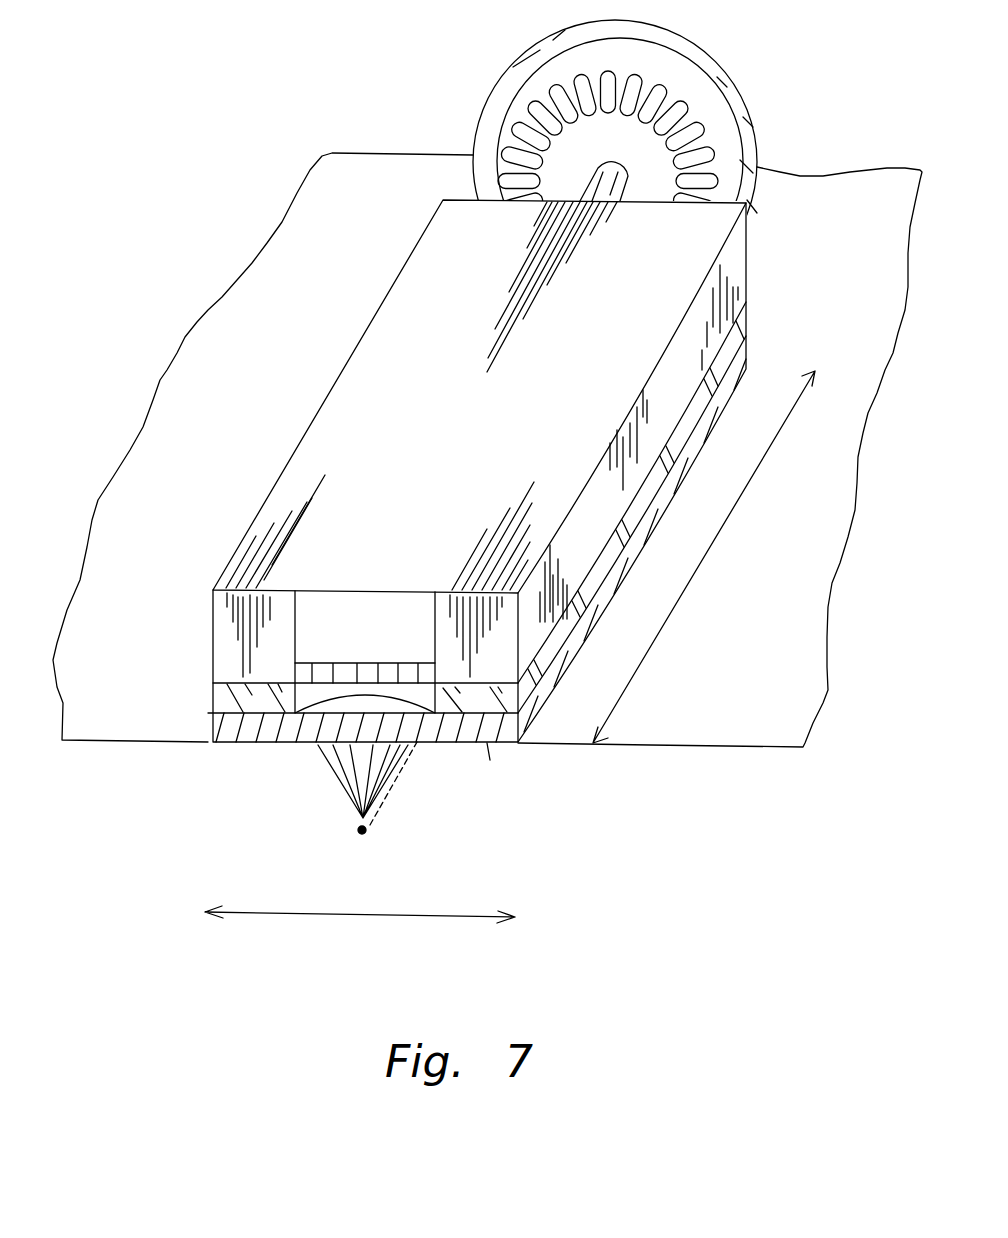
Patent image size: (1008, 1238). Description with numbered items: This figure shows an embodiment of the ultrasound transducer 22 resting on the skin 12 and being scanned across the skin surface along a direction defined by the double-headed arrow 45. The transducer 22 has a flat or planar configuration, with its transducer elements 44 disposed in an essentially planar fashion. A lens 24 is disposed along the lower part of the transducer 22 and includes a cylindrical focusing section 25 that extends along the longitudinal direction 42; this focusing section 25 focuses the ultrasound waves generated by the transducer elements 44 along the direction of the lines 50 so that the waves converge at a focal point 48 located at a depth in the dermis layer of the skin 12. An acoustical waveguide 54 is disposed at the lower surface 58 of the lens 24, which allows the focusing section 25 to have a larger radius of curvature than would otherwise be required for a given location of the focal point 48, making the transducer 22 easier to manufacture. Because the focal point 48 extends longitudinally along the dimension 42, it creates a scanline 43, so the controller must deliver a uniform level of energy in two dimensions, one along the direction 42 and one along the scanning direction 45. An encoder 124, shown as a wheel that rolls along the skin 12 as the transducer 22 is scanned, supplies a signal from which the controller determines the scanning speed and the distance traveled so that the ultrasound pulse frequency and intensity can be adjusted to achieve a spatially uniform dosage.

The skin 12 is at (763, 720).
The encoder 124 is at (538, 55).
The transducer 22 is at (327, 378).
The lens 24 is at (748, 318).
The acoustical waveguide 54 is at (748, 352).
The transducer elements 44 is at (388, 670).
The focusing section 25 is at (347, 700).
The lines 50 is at (338, 793).
The scanline 43 is at (408, 762).
The focal point 48 is at (358, 832).
The lower surface of lens 58 is at (487, 743).
The direction 42 is at (714, 548).
The double-headed arrow 45 is at (340, 915).